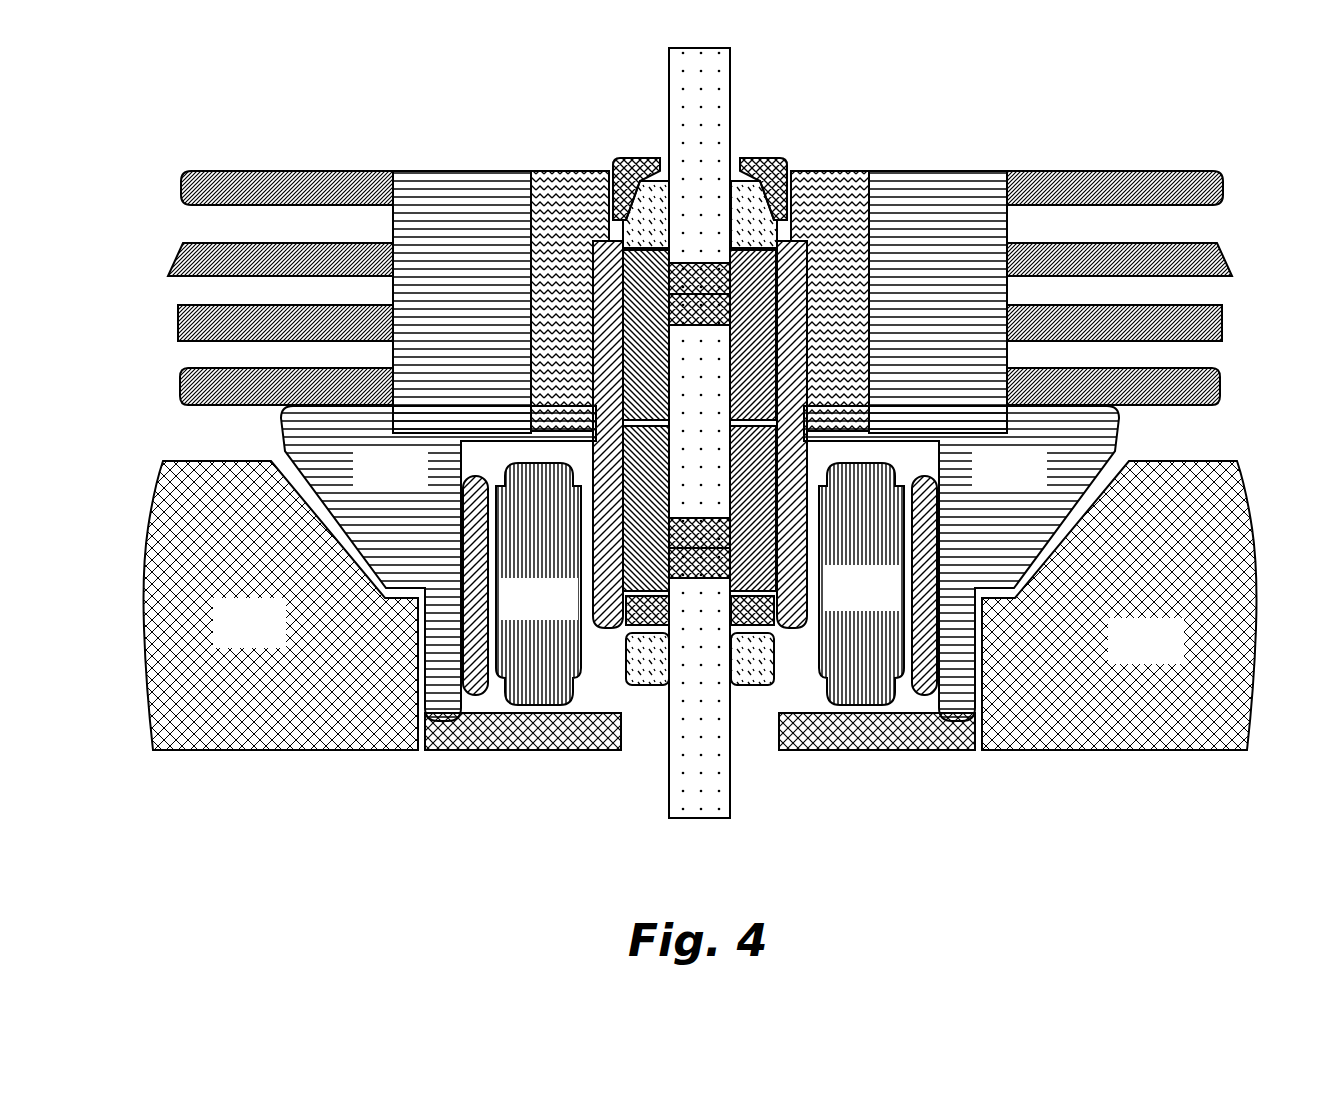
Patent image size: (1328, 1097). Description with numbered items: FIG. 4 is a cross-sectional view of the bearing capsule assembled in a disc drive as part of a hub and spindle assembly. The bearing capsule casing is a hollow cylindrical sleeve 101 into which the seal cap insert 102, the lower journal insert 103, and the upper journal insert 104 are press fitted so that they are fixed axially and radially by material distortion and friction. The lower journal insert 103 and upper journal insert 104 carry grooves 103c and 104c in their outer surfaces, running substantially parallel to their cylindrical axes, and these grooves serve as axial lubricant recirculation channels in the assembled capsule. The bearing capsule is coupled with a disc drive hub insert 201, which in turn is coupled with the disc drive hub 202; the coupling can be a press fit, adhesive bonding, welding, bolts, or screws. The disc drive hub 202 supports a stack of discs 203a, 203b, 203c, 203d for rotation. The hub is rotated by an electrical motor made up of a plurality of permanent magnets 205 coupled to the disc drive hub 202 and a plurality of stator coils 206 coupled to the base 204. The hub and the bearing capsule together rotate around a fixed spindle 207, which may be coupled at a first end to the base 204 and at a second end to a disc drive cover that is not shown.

The hollow cylindrical sleeve 101 is at (585, 250).
The seal cap insert 102 is at (635, 680).
The lower journal insert 103 is at (597, 623).
The groove 103c is at (797, 620).
The upper journal insert 104 is at (577, 160).
The groove 104c is at (798, 157).
The disc drive hub insert 201 is at (520, 197).
The disc drive hub 202 is at (700, 563).
The disc 203a is at (168, 186).
The disc 203b is at (168, 248).
The disc 203c is at (168, 318).
The disc 203d is at (168, 380).
The base 204 is at (700, 605).
The permanent magnets 205 is at (462, 690).
The stator coils 206 is at (700, 584).
The spindle 207 is at (680, 80).